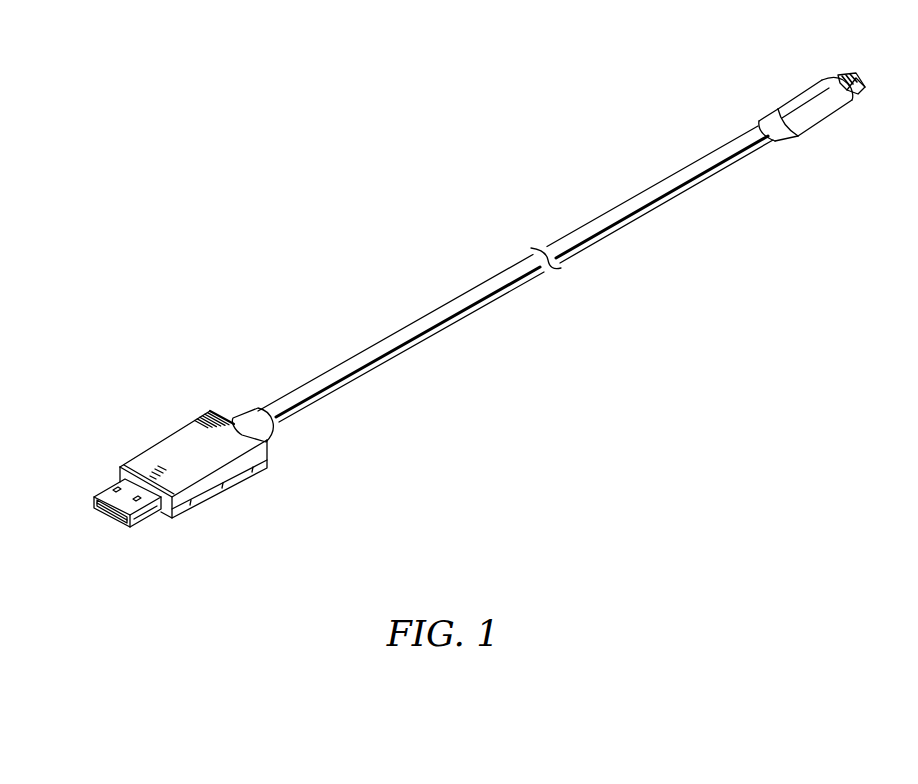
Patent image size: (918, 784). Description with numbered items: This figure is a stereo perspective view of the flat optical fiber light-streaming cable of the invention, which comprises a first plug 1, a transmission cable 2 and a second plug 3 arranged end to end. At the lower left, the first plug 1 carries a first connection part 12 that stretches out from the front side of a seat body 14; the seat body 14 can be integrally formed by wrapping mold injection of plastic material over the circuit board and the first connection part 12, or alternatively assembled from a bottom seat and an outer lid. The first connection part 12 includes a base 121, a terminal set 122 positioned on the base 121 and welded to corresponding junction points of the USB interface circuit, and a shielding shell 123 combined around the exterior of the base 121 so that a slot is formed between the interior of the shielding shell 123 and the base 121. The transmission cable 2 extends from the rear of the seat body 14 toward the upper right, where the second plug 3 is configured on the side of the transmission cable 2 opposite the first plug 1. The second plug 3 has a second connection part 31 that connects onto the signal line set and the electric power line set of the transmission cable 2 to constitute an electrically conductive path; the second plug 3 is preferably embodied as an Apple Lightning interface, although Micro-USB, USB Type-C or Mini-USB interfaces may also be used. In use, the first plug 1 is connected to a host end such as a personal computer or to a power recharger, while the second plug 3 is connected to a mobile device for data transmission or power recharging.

The first plug 1 is at (130, 411).
The first connection part 12 is at (90, 472).
The base 121 is at (117, 523).
The terminal set 122 is at (102, 514).
The shielding shell 123 is at (142, 517).
The seat body 14 is at (222, 485).
The transmission cable 2 is at (435, 317).
The second plug 3 is at (805, 97).
The second connection part 31 is at (835, 62).